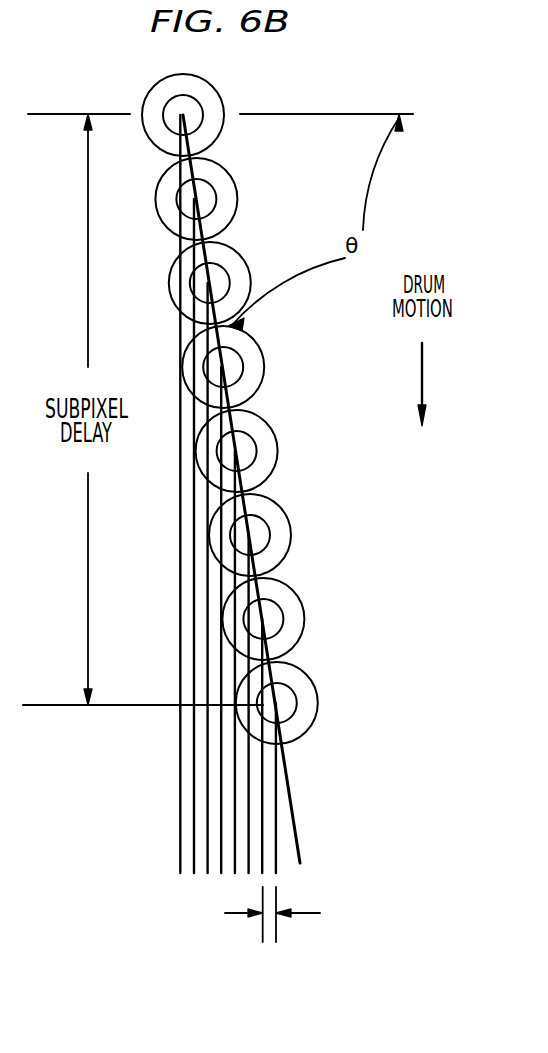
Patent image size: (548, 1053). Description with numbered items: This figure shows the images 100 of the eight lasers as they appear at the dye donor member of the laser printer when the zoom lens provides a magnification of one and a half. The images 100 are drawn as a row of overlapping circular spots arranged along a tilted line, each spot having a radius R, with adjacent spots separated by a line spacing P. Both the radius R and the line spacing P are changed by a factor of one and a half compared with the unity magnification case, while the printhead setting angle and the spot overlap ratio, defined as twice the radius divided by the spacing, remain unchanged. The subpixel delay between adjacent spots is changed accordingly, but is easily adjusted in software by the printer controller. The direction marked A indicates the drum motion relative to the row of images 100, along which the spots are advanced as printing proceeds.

The images of the lasers 100 is at (221, 100).
The radius R is at (308, 713).
The line spacing P is at (285, 914).
The drum motion direction A is at (422, 367).